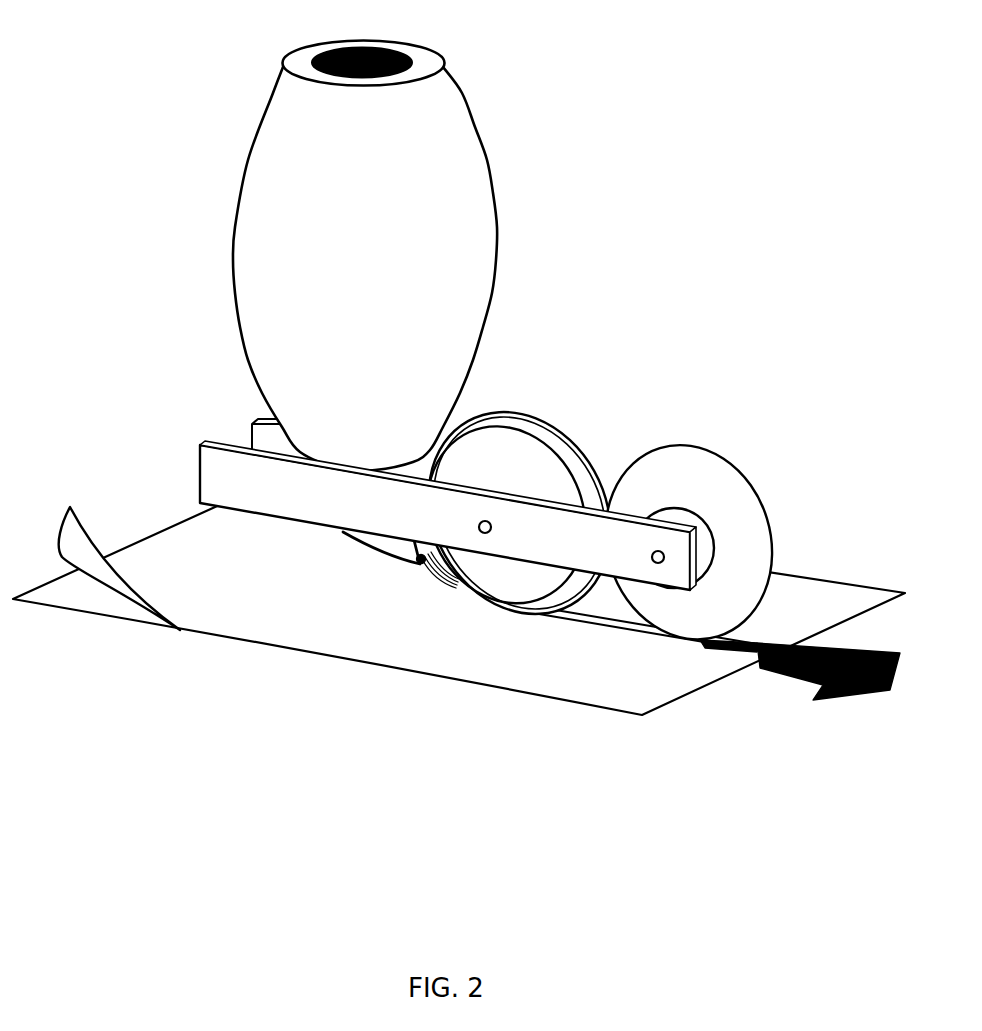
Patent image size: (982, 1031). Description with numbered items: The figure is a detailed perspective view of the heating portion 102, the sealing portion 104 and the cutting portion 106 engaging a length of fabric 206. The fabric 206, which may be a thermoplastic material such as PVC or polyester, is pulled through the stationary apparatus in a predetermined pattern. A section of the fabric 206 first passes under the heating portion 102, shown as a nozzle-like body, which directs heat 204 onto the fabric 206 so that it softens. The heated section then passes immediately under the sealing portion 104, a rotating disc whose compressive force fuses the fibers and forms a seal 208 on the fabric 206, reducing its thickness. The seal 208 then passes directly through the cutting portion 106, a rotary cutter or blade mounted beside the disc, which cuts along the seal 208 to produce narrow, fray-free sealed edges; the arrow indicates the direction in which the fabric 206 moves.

The heating portion 102 is at (378, 556).
The sealing portion 104 is at (557, 427).
The cutting portion 106 is at (745, 482).
The heat 204 is at (446, 584).
The fabric 206 is at (303, 642).
The seal 208 is at (613, 628).